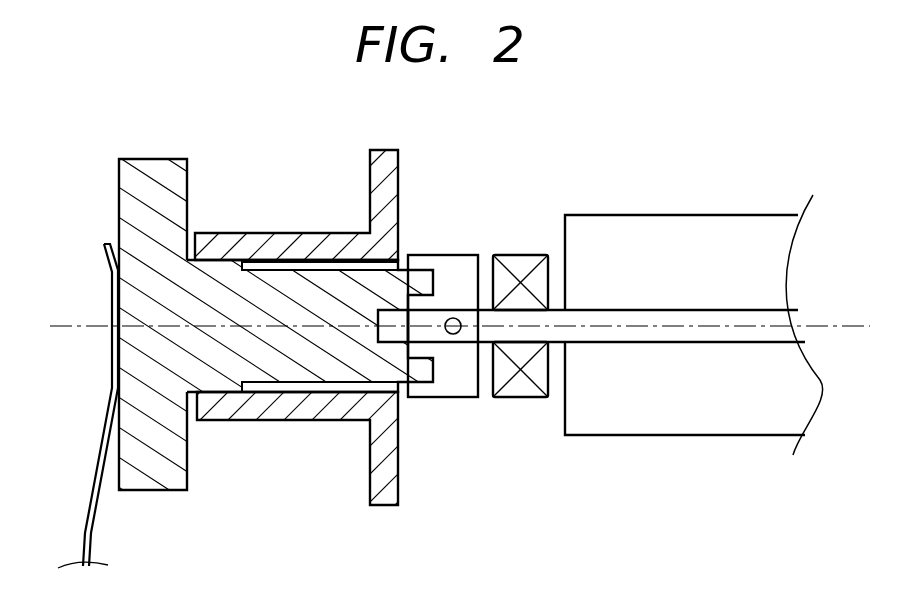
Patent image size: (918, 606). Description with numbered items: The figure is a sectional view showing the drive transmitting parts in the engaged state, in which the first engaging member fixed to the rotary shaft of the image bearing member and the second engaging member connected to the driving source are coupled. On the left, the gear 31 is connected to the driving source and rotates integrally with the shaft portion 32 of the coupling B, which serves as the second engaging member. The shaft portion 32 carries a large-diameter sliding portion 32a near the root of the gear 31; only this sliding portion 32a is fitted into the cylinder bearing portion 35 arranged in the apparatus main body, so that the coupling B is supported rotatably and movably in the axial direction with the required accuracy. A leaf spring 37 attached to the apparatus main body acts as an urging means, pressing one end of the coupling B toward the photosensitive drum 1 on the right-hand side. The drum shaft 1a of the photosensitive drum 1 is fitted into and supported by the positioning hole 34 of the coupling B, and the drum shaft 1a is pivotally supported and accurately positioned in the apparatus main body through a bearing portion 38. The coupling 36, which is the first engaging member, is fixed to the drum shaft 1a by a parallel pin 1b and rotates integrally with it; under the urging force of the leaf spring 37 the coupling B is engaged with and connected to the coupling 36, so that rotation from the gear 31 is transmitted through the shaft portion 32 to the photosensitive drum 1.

The photosensitive drum 1 is at (627, 248).
The drum shaft 1a is at (585, 335).
The parallel pin 1b is at (455, 318).
The gear 31 is at (160, 158).
The shaft portion 32 is at (300, 300).
The sliding portion 32a is at (213, 370).
The positioning hole 34 is at (385, 338).
The cylinder bearing portion 35 is at (347, 248).
The coupling 36 is at (448, 386).
The leaf spring 37 is at (97, 513).
The bearing portion 38 is at (517, 268).
The coupling B is at (137, 247).